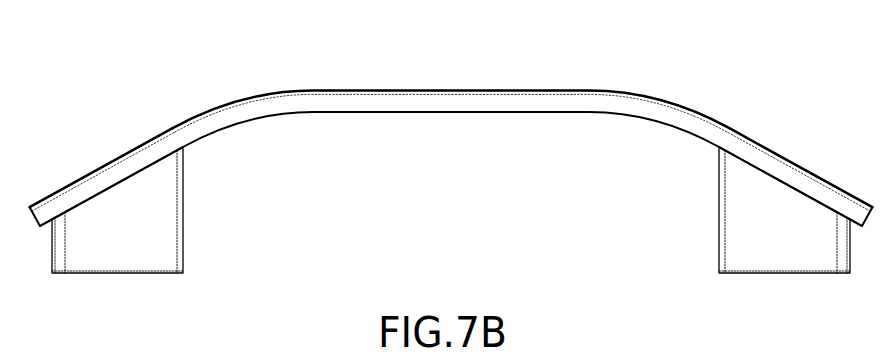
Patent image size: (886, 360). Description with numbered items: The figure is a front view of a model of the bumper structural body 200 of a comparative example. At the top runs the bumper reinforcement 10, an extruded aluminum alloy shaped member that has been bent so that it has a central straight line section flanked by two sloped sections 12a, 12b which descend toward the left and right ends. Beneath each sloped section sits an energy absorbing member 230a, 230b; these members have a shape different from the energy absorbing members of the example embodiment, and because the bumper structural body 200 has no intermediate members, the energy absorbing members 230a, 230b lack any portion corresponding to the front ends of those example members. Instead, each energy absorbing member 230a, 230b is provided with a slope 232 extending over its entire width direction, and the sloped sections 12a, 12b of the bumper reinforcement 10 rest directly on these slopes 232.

The bumper reinforcement 10 is at (445, 102).
The sloped section 12a is at (127, 167).
The sloped section 12b is at (789, 163).
The bumper structural body 200 is at (734, 100).
The energy absorbing member 230a is at (123, 258).
The energy absorbing member 230b is at (780, 258).
The slope 232 is at (97, 207).